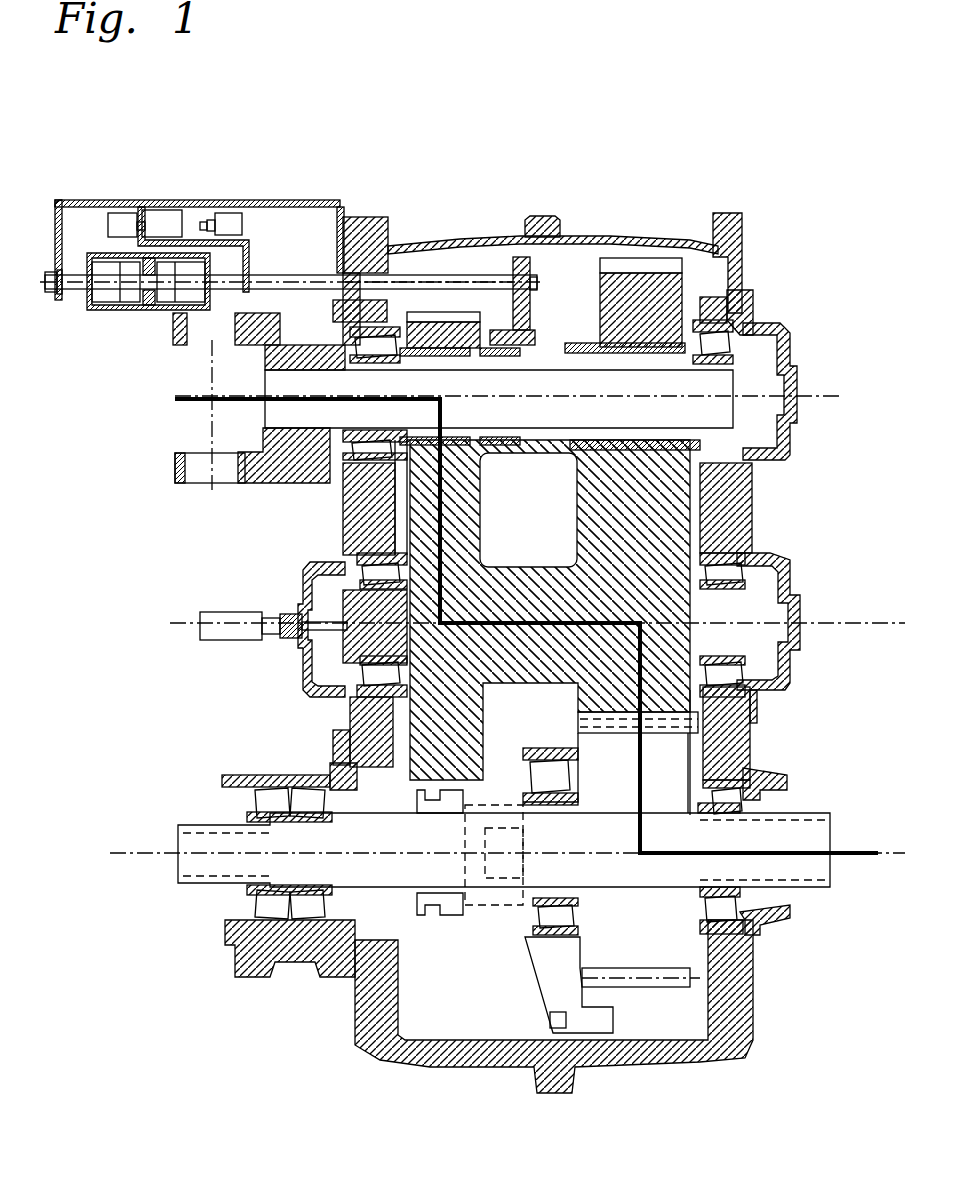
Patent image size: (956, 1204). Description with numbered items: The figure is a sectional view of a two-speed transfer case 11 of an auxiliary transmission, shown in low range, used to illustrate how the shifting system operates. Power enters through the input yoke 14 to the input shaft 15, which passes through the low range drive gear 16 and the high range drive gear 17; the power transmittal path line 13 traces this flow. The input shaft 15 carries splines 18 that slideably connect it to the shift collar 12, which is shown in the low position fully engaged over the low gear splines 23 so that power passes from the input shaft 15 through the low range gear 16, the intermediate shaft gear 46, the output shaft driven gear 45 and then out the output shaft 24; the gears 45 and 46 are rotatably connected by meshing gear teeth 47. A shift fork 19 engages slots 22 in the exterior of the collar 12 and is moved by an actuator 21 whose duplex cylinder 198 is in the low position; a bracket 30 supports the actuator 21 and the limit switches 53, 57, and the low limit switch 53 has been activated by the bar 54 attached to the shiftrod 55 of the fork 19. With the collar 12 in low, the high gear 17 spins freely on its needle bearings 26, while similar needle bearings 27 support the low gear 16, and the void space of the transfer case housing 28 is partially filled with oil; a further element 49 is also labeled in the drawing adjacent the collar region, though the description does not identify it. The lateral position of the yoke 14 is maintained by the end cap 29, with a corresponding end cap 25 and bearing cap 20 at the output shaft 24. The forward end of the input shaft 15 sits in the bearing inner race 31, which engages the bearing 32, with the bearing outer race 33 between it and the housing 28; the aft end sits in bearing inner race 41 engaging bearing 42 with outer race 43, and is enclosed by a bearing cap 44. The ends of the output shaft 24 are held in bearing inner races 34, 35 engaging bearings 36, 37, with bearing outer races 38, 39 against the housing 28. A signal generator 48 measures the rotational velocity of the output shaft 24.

The two-speed transfer case 11 is at (738, 212).
The shift collar 12 is at (460, 270).
The power transmittal path line 13 is at (175, 399).
The input yoke 14 is at (178, 468).
The input shaft 15 is at (265, 410).
The low range drive gear 16 is at (430, 312).
The high range drive gear 17 is at (700, 280).
The splines 18 is at (545, 465).
The shift fork 19 is at (490, 270).
The bearing cap 20 is at (270, 978).
The actuator 21 is at (95, 198).
The slots 22 is at (530, 300).
The low gear splines 23 is at (500, 356).
The output shaft 24 is at (190, 840).
The end cap 25 is at (780, 912).
The needle bearings 26 is at (620, 353).
The needle bearings 27 is at (430, 356).
The transfer case housing 28 is at (640, 245).
The end cap 29 is at (285, 465).
The bracket 30 is at (296, 200).
The bearing inner race 31 is at (370, 440).
The bearing 32 is at (343, 510).
The bearing outer race 33 is at (343, 490).
The bearing inner race 34 is at (295, 822).
The bearing inner race 35 is at (705, 815).
The bearing 36 is at (285, 795).
The bearing 37 is at (730, 800).
The bearing outer race 38 is at (290, 790).
The bearing outer race 39 is at (735, 780).
The bearing inner race 41 is at (705, 356).
The bearing 42 is at (735, 330).
The bearing outer race 43 is at (740, 310).
The bearing cap 44 is at (775, 330).
The output shaft driven gear 45 is at (615, 987).
The intermediate shaft gear 46 is at (494, 671).
The meshing gear teeth 47 is at (578, 720).
The signal generator 48 is at (215, 612).
The clutch ring 49 is at (590, 338).
The low limit switch 53 is at (122, 213).
The bar 54 is at (182, 240).
The shiftrod 55 is at (423, 270).
The limit switch 57 is at (228, 213).
The duplex cylinder 198 is at (100, 310).